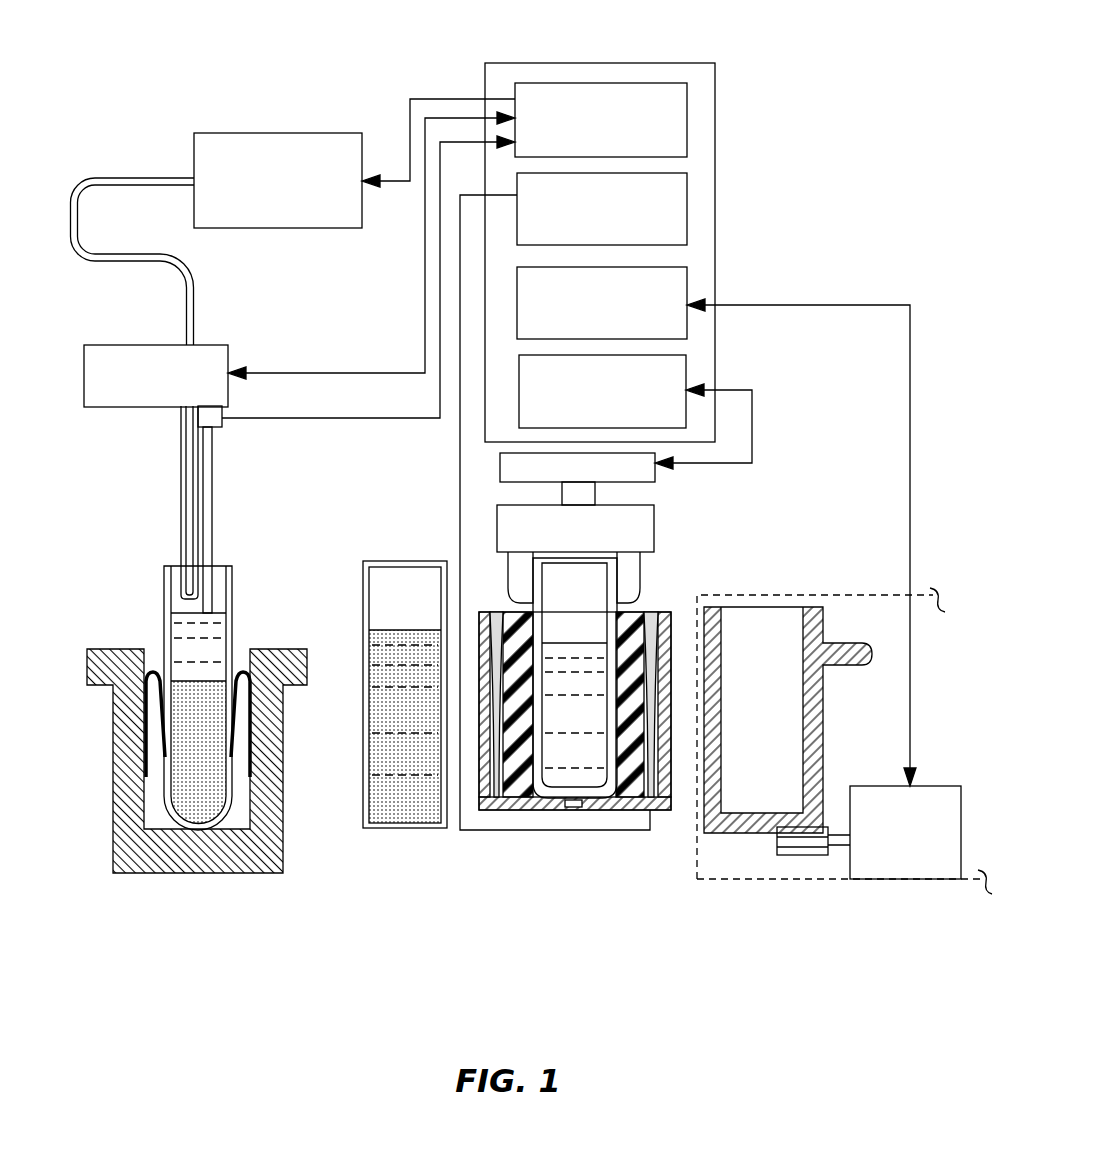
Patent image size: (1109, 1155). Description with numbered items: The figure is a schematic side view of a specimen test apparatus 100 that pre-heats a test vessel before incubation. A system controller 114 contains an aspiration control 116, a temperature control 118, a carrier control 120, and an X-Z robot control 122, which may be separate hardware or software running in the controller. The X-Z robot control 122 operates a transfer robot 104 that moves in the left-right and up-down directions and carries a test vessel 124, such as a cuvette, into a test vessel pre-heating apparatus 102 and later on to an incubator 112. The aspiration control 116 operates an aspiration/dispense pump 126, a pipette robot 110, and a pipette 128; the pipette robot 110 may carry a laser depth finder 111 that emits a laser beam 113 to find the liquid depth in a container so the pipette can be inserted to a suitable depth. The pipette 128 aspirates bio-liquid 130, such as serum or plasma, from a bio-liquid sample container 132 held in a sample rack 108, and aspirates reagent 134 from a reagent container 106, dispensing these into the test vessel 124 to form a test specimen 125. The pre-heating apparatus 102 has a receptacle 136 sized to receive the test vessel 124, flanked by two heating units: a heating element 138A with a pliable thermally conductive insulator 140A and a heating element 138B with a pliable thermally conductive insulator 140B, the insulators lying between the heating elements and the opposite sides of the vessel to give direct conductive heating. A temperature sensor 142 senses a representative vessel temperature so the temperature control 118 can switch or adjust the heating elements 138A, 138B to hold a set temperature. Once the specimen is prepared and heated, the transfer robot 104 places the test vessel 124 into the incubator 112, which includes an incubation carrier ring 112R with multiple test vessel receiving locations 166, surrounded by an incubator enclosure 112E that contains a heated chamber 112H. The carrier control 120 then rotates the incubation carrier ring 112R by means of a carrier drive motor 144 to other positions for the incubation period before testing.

The specimen test apparatus 100 is at (795, 140).
The test vessel pre-heating apparatus 102 is at (565, 787).
The transfer robot 104 is at (655, 527).
The reagent container 106 is at (370, 676).
The sample rack 108 is at (295, 878).
The pipette robot 110 is at (130, 408).
The laser depth finder 111 is at (222, 426).
The incubator 112 is at (843, 726).
The incubator enclosure 112E is at (832, 593).
The incubation carrier ring 112R is at (801, 720).
The heated chamber 112H is at (738, 851).
The laser beam 113 is at (212, 503).
The system controller 114 is at (720, 66).
The aspiration control 116 is at (687, 113).
The temperature control 118 is at (687, 212).
The carrier control 120 is at (687, 280).
The X-Z robot control 122 is at (686, 370).
The test vessel 124 is at (619, 678).
The test specimen 125 is at (572, 640).
The aspiration/dispense pump 126 is at (283, 133).
The pipette 128 is at (181, 497).
The bio-liquid 130 is at (170, 632).
The bio-liquid sample container 132 is at (154, 685).
The reagent 134 is at (390, 728).
The receptacle 136 is at (620, 635).
The heating element 138A is at (497, 817).
The heating element 138B is at (651, 817).
The pliable thermally conductive insulator 140A is at (522, 777).
The pliable thermally conductive insulator 140B is at (627, 768).
The temperature sensor 142 is at (576, 808).
The carrier drive motor 144 is at (915, 880).
The test vessel receiving location 166 is at (760, 690).